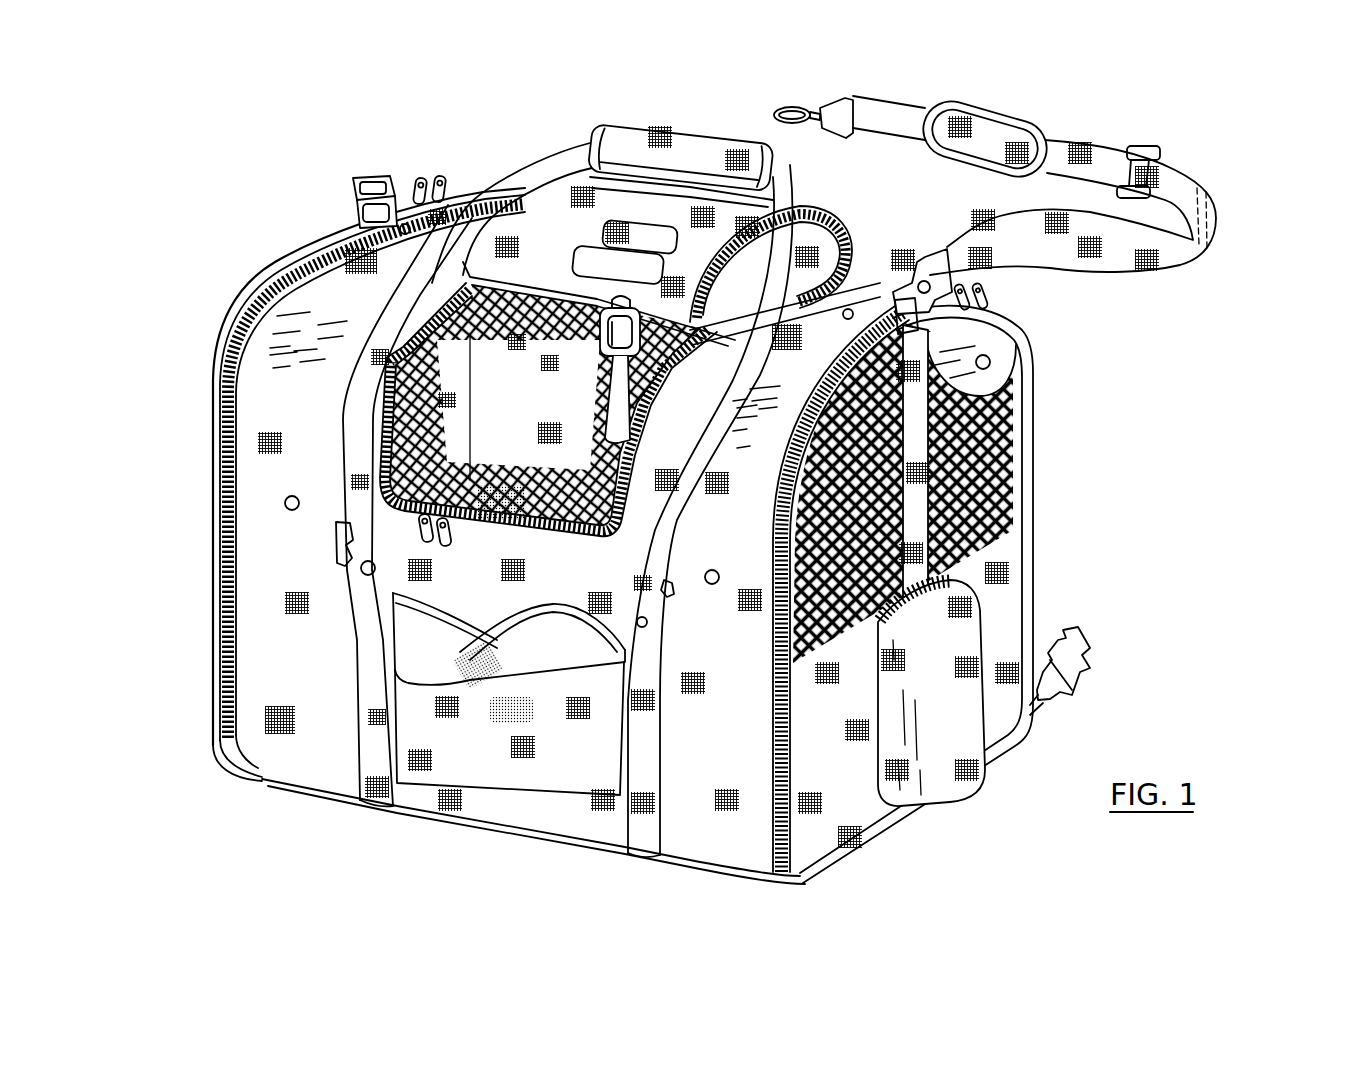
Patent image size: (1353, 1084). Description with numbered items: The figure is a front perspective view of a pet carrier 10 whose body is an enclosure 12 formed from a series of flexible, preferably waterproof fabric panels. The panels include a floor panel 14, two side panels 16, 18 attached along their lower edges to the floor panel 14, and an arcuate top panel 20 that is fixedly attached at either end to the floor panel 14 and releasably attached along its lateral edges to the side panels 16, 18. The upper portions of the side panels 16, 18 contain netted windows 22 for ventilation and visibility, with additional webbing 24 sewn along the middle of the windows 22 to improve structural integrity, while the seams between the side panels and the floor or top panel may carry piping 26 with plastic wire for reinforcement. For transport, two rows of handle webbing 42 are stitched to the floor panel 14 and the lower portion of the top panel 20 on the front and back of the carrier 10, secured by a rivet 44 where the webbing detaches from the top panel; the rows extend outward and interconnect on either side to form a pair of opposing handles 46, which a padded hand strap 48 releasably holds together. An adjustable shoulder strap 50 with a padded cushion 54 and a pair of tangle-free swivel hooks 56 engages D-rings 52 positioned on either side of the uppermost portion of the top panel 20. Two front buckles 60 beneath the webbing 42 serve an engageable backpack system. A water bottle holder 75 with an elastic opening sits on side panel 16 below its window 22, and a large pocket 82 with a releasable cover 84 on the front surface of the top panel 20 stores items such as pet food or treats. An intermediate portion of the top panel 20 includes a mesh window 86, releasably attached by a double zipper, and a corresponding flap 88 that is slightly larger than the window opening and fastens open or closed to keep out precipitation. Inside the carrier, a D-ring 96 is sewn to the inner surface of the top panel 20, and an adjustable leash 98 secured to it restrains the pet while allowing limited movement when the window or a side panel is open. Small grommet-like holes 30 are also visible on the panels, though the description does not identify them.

The pet carrier 10 is at (701, 486).
The enclosure 12 is at (378, 466).
The floor panel 14 is at (477, 834).
The side panel 16 is at (874, 815).
The side panel 18 is at (200, 334).
The arcuate top panel 20 is at (358, 245).
The netted window 22 is at (1027, 370).
The webbing 24 is at (910, 585).
The piping 26 is at (840, 863).
The grommet vent holes 30 is at (405, 224).
The handle webbing 42 is at (370, 807).
The rivet 44 is at (365, 575).
The handles 46 is at (563, 147).
The padded hand strap 48 is at (670, 127).
The adjustable shoulder strap 50 is at (1183, 183).
The D-rings 52 is at (370, 180).
The padded cushion 54 is at (1017, 120).
The tangle-free swivel hooks 56 is at (773, 113).
The front buckles 60 is at (337, 527).
The water bottle holder 75 is at (943, 770).
The large pocket 82 is at (443, 767).
The releasable cover 84 is at (412, 625).
The mesh window 86 is at (395, 358).
The flap 88 is at (820, 237).
The D-ring 96 is at (596, 318).
The leash 98 is at (588, 381).